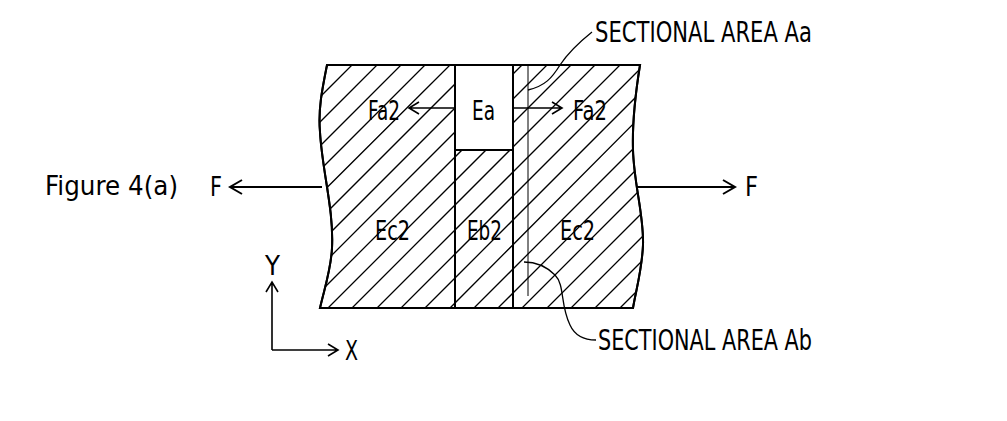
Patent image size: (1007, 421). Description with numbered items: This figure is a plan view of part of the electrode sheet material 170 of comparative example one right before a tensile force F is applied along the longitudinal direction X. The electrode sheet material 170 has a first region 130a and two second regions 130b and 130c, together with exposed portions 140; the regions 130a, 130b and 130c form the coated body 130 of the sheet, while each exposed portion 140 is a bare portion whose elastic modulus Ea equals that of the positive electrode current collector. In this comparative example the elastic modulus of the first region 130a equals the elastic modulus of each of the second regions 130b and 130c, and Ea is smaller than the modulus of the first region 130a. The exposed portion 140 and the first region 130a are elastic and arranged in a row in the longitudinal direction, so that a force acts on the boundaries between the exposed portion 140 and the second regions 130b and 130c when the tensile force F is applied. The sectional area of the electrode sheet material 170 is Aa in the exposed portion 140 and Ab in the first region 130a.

The electrode sheet material 170 is at (350, 55).
The base portion 130 is at (402, 78).
The exposed portion 140 is at (490, 78).
The first region 130a is at (487, 293).
The second region 130b is at (336, 99).
The second region 130c is at (624, 90).